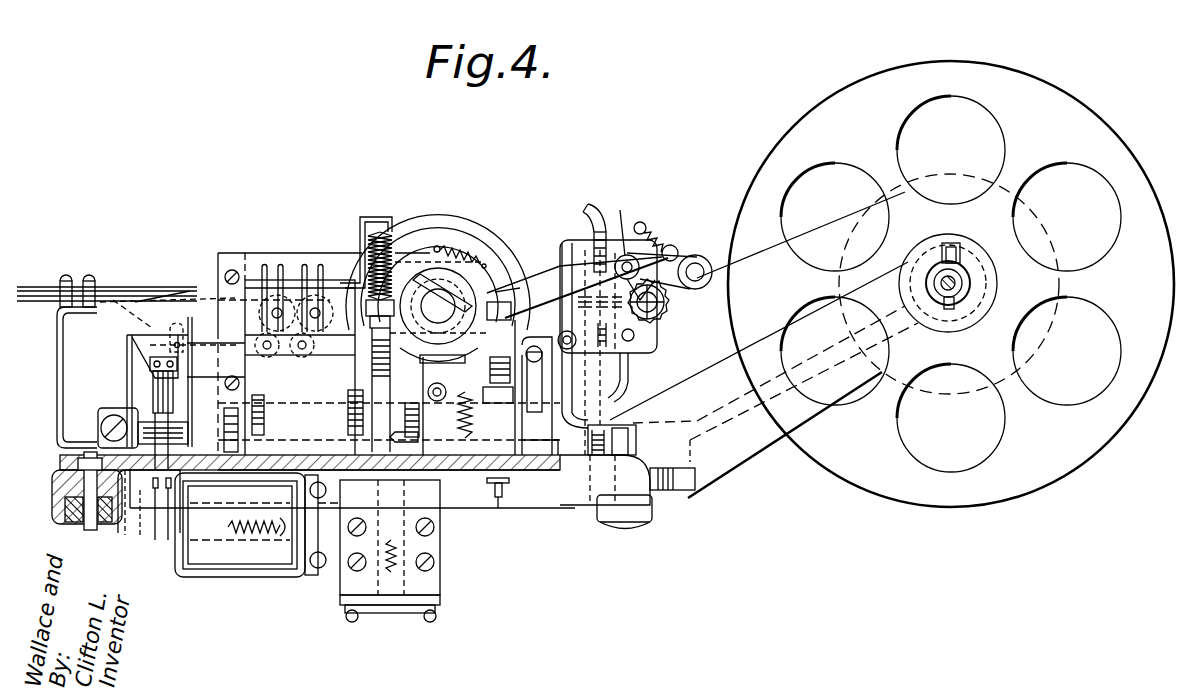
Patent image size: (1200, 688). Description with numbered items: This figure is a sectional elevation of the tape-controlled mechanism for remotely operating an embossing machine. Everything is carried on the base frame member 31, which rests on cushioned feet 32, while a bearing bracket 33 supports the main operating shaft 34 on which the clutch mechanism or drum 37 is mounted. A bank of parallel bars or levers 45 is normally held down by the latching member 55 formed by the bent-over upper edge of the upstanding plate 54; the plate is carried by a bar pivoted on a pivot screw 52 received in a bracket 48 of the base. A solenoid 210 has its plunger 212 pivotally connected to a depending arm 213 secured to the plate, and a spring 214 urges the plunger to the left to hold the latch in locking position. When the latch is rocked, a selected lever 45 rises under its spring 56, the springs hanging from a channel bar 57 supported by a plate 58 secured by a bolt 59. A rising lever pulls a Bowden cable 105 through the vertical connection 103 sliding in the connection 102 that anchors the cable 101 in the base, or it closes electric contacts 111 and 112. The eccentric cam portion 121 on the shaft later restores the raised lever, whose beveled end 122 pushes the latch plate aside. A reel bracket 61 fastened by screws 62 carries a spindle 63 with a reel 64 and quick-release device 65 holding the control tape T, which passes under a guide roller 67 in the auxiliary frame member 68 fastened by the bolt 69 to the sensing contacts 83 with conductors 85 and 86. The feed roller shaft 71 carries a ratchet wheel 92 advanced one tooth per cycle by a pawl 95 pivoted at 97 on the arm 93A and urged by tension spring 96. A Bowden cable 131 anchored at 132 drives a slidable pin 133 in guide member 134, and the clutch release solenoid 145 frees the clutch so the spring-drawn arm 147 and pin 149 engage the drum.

The base frame member 31 is at (528, 505).
The cushioned feet 32 is at (648, 545).
The bearing bracket 33 is at (444, 349).
The main operating shaft 34 is at (498, 345).
The clutch mechanism 37 is at (478, 228).
The bars or levers 45 is at (204, 340).
The bracket or lug 48 is at (90, 416).
The pivot screw 52 is at (115, 416).
The upstanding plate 54 is at (135, 358).
The latching member 55 is at (132, 336).
The spring 56 is at (372, 250).
The channel bar 57 is at (392, 225).
The plate 58 is at (362, 222).
The bolt or screw 59 is at (345, 268).
The reel bracket 61 is at (730, 478).
The screws 62 is at (672, 414).
The spindle 63 is at (972, 290).
The reel 64 is at (1085, 108).
The quick-release device 65 is at (958, 246).
The guide roller 67 is at (692, 255).
The auxiliary frame member 68 is at (575, 240).
The bolt or screw 69 is at (624, 465).
The feed roller shaft 71 is at (664, 305).
The sensing contacts 83 is at (612, 368).
The conductors 85 is at (600, 212).
The conductors 86 is at (615, 392).
The ratchet wheel 92 is at (668, 318).
The arm 93A is at (516, 251).
The pawl 95 is at (648, 226).
The tension spring 96 is at (668, 245).
The pivot 97 is at (630, 224).
The Bowden cable 101 is at (143, 483).
The connection 102 is at (178, 428).
The vertical upstanding connection 103 is at (172, 420).
The Bowden cable 105 is at (170, 542).
The electric contact 111 is at (170, 278).
The electric contact 112 is at (200, 296).
The eccentric cam portion 121 is at (508, 286).
The beveled end 122 is at (130, 312).
The Bowden cable 131 is at (498, 510).
The anchor 132 is at (510, 482).
The slidable pin 133 is at (471, 387).
The guide member 134 is at (540, 445).
The clutch release solenoid 145 is at (440, 556).
The arm 147 is at (463, 248).
The pin 149 is at (436, 279).
The solenoid 210 is at (268, 578).
The plunger 212 is at (150, 532).
The depending arm 213 is at (168, 490).
The spring 214 is at (245, 536).
The control tape T is at (710, 255).